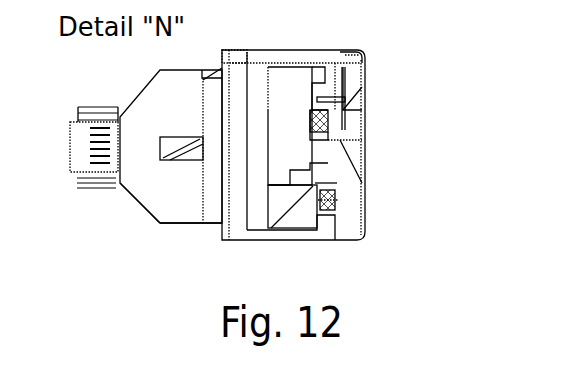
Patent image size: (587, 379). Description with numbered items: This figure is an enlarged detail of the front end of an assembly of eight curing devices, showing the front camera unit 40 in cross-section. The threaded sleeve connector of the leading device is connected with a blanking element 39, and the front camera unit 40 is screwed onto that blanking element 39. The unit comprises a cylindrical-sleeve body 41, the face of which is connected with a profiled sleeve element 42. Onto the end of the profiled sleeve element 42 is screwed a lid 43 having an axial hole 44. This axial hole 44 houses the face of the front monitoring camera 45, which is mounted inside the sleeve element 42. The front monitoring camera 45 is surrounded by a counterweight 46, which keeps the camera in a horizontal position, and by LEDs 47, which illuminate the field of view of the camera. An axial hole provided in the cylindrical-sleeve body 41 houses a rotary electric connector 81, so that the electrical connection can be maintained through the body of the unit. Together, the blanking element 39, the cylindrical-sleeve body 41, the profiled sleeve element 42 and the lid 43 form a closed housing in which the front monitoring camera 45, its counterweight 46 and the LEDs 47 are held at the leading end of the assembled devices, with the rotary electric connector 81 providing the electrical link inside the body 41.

The blanking element 39 is at (133, 142).
The front camera unit 40 is at (172, 102).
The cylindrical-sleeve body 41 is at (188, 210).
The profiled sleeve element 42 is at (268, 242).
The lid 43 is at (419, 86).
The axial hole 44 is at (419, 174).
The front monitoring camera 45 is at (419, 129).
The counterweight 46 is at (285, 215).
The LEDs 47 is at (419, 210).
The rotary electric connector 81 is at (170, 147).